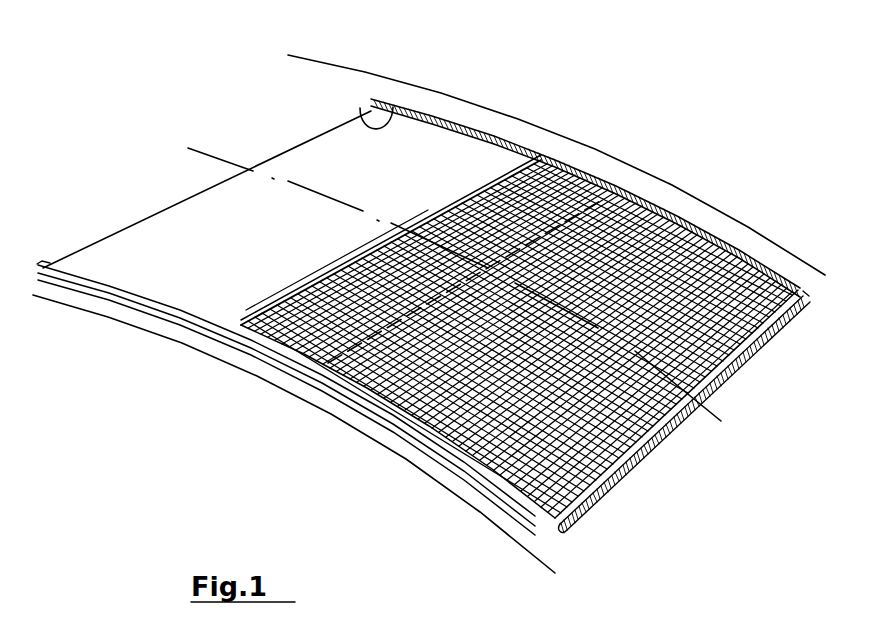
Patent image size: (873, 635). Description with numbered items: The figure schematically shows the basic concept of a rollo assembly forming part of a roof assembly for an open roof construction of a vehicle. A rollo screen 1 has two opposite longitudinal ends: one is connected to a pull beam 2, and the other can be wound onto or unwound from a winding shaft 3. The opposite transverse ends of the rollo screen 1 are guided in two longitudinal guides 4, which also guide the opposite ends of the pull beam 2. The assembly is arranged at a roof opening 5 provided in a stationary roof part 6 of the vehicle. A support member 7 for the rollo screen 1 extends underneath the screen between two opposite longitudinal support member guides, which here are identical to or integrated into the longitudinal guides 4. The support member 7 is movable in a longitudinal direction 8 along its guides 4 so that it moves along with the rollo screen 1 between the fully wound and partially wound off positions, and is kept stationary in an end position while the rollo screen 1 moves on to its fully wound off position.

The rollo screen 1 is at (683, 248).
The pull beam 2 is at (520, 154).
The winding shaft 3 is at (545, 510).
The longitudinal guides 4 is at (440, 116).
The roof opening 5 is at (378, 108).
The stationary roof part 6 is at (295, 95).
The support member 7 is at (590, 195).
The longitudinal direction 8 is at (222, 152).